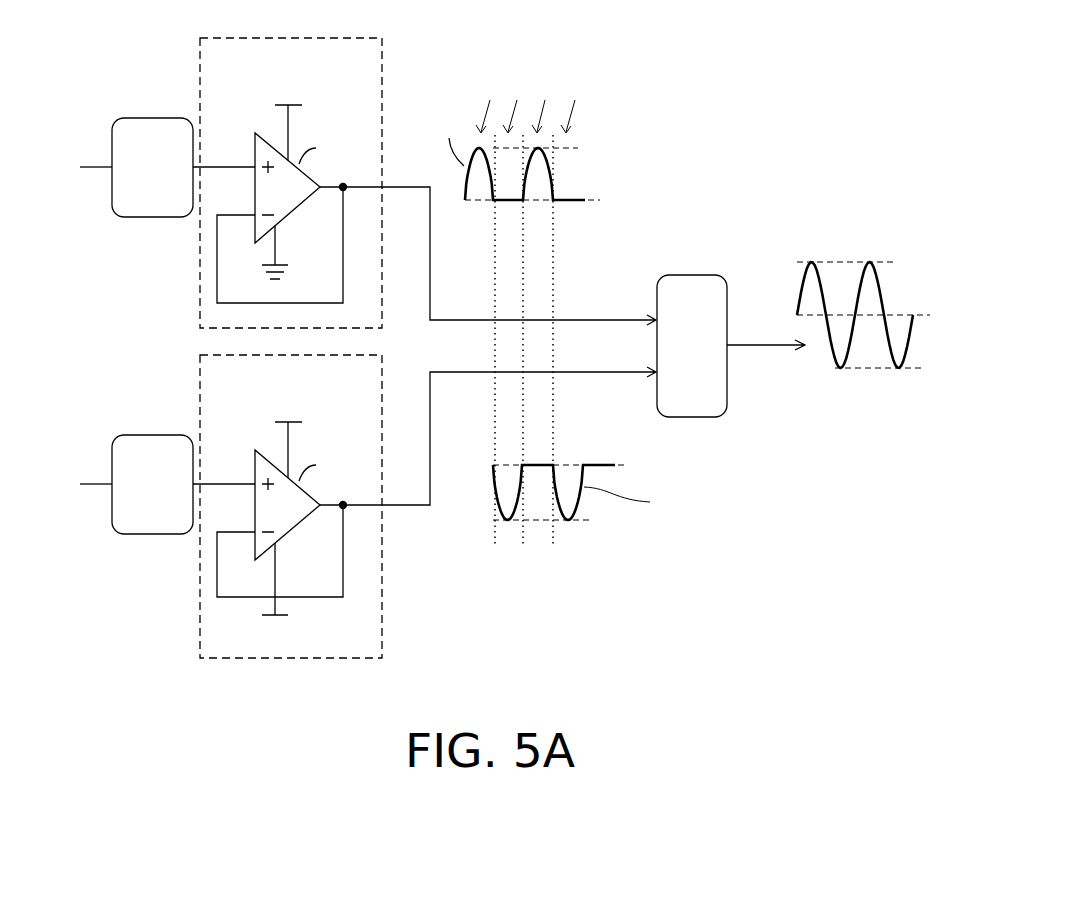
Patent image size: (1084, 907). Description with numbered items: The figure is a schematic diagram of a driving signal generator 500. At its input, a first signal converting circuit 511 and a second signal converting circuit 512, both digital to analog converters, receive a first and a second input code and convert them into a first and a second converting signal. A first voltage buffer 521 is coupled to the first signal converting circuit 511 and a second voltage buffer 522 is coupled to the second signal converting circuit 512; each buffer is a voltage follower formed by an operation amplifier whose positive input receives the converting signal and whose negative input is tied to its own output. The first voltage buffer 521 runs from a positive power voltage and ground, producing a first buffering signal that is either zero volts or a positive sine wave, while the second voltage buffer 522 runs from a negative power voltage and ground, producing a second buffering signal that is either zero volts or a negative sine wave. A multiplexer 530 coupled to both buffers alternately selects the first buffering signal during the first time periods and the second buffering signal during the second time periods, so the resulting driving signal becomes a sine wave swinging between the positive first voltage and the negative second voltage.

The driving signal generator 500 is at (867, 651).
The first signal converting circuit 511 is at (153, 118).
The second signal converting circuit 512 is at (153, 435).
The first voltage buffer 521 is at (384, 89).
The second voltage buffer 522 is at (384, 626).
The multiplexer 530 is at (692, 275).